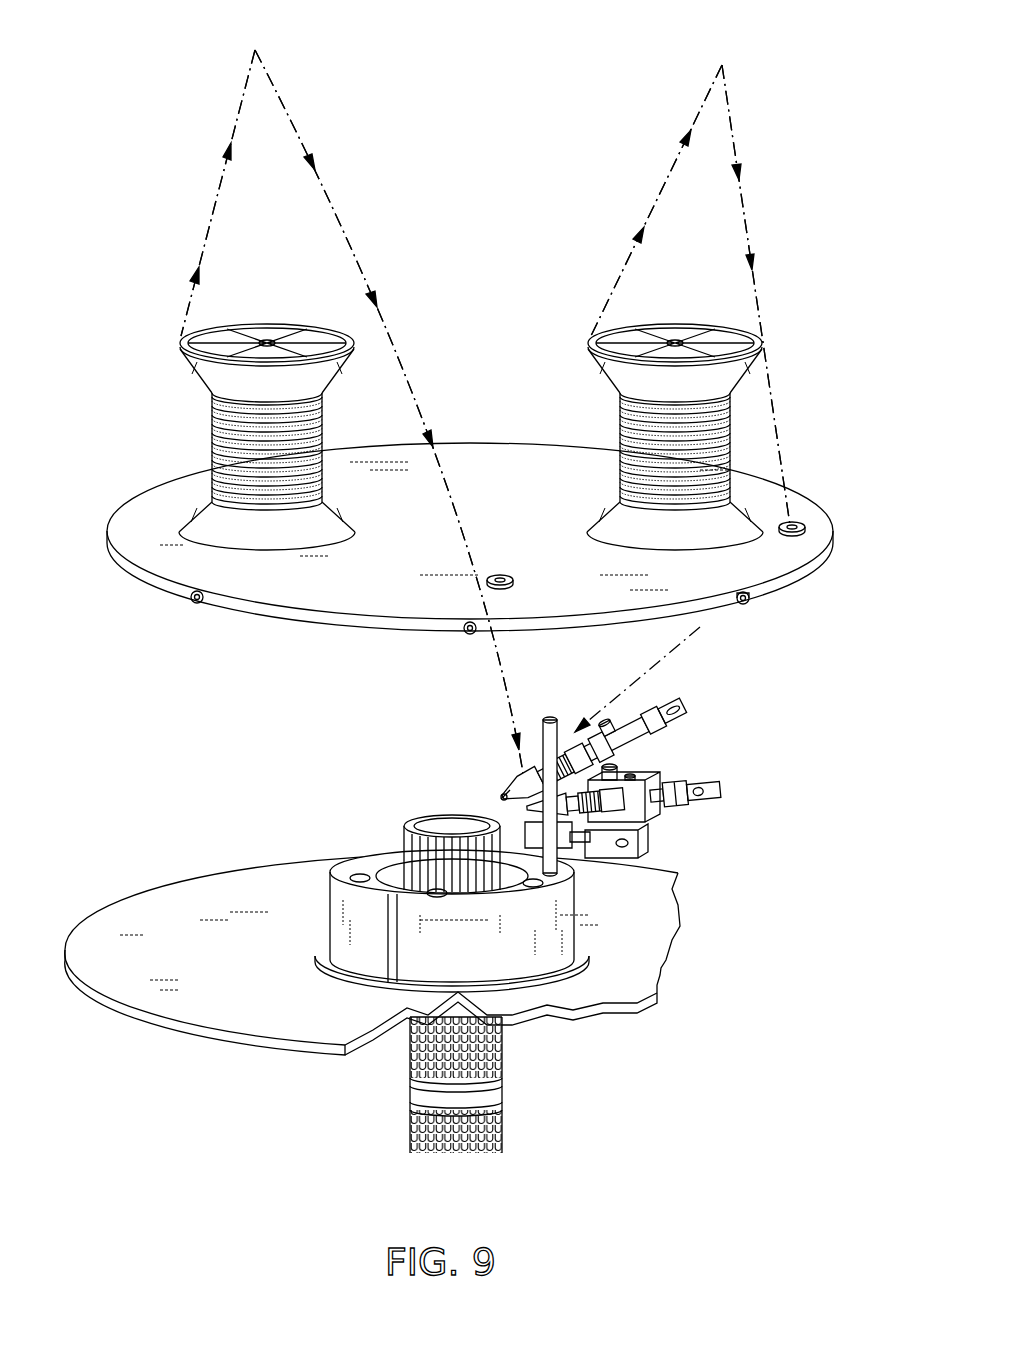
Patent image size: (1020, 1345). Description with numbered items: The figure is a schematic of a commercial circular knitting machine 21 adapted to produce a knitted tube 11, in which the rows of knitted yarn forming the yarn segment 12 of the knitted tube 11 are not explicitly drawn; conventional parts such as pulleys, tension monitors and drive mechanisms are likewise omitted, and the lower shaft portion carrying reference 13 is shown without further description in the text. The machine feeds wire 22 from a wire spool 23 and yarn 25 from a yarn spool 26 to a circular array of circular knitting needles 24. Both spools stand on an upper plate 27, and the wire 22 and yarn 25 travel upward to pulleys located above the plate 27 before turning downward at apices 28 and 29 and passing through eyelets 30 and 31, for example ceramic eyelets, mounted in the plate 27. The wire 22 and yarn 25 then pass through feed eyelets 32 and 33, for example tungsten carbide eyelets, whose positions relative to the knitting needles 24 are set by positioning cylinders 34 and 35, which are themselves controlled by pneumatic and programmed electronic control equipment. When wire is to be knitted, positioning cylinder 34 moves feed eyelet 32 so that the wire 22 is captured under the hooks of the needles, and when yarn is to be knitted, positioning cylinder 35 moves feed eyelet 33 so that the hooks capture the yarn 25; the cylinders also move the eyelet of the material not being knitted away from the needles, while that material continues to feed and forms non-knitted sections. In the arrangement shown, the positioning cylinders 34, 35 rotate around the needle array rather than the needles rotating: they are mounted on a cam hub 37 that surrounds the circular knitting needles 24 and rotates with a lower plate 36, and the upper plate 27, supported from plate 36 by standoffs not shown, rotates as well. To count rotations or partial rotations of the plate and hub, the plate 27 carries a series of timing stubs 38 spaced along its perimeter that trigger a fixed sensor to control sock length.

The knitted tube 11 is at (290, 1118).
The yarn segment 12 is at (502, 1098).
The braided sleeve 13 is at (504, 1048).
The circular knitting machine 21 is at (200, 720).
The wire 22 is at (660, 186).
The wire spool 23 is at (656, 437).
The circular knitting needles 24 is at (500, 813).
The yarn 25 is at (212, 211).
The yarn spool 26 is at (237, 437).
The plate 27 is at (278, 583).
The apex 28 is at (722, 65).
The apex 29 is at (255, 50).
The eyelet 30 is at (805, 526).
The eyelet 31 is at (515, 582).
The feed eyelet 32 is at (503, 797).
The feed eyelet 33 is at (528, 795).
The positioning cylinder 34 is at (607, 750).
The positioning cylinder 35 is at (665, 808).
The plate 36 is at (148, 970).
The cam hub 37 is at (353, 917).
The timing stubs 38 is at (750, 603).